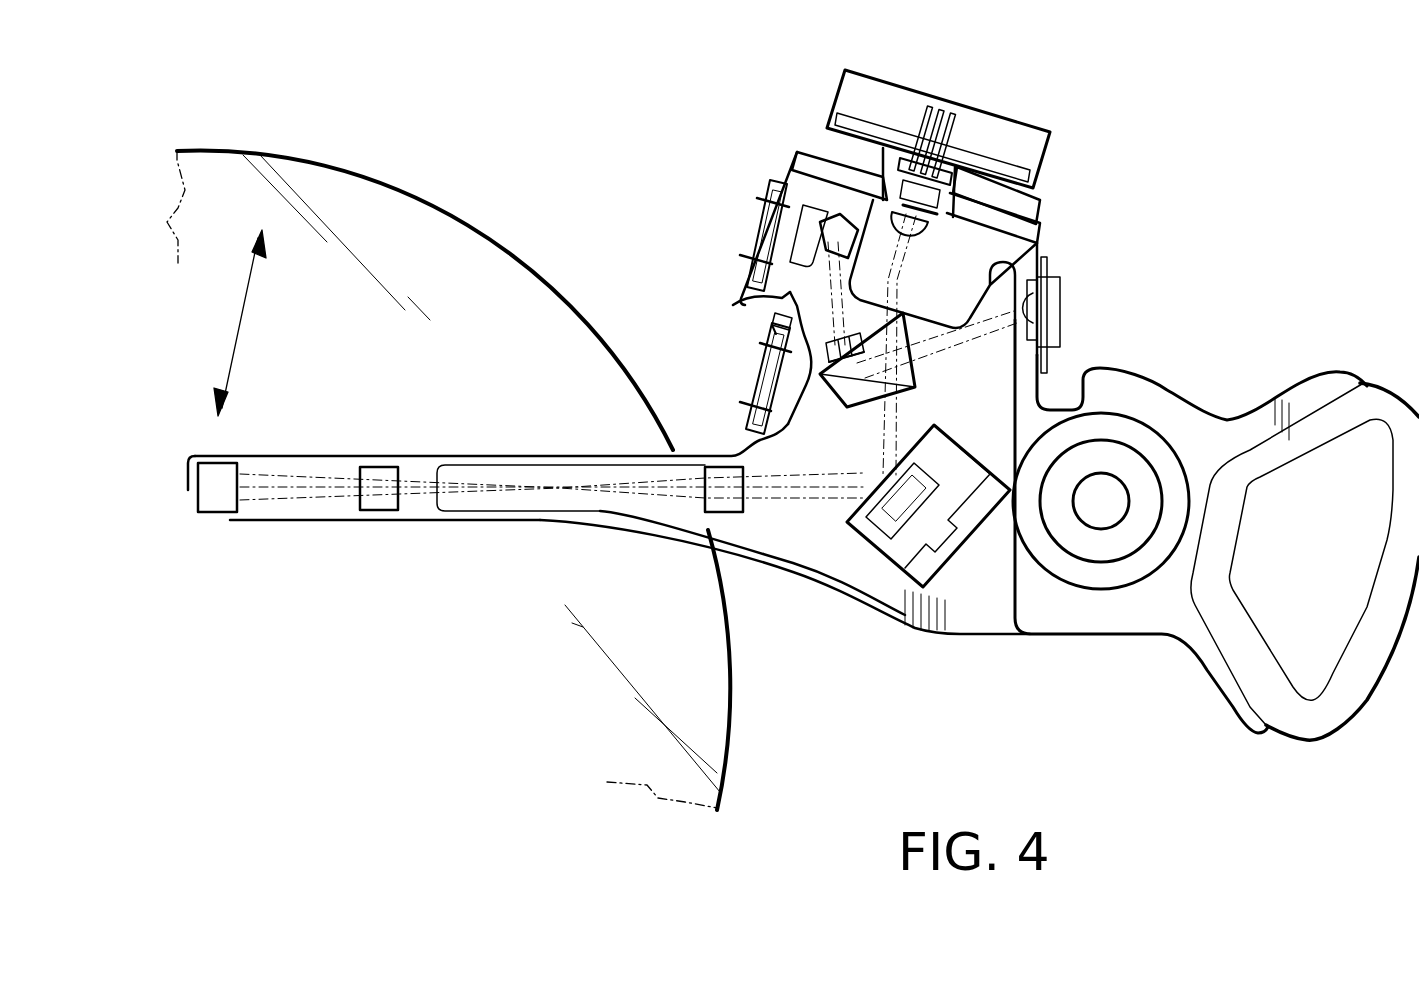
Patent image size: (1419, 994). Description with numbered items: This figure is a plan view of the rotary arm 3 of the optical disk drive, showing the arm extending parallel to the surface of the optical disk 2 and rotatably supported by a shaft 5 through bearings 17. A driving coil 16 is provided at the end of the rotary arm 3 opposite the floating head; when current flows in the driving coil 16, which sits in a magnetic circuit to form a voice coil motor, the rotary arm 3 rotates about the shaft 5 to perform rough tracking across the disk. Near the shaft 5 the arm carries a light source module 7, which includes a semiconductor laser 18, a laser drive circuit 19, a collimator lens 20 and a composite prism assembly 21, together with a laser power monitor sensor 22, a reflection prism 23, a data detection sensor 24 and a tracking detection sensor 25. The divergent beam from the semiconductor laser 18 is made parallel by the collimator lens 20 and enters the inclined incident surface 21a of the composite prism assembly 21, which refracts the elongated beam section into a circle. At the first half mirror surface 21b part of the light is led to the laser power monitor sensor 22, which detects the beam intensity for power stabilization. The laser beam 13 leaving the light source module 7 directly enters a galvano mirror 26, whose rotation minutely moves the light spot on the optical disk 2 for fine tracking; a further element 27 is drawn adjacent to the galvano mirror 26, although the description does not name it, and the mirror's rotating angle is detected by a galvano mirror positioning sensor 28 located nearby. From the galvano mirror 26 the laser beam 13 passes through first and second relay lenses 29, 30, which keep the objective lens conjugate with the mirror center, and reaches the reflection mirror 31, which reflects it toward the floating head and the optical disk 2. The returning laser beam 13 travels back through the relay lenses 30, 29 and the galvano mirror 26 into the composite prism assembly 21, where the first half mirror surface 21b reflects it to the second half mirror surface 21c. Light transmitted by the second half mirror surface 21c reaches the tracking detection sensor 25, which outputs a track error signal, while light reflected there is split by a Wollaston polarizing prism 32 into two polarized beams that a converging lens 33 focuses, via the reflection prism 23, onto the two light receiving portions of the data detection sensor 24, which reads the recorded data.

The optical disk 2 is at (373, 180).
The rotary arm 3 is at (543, 521).
The shaft 5 is at (1097, 443).
The light source module 7 is at (698, 115).
The laser beam 13 is at (316, 457).
The driving coil 16 is at (1357, 373).
The bearings 17 is at (1140, 457).
The semiconductor laser 18 is at (903, 165).
The laser drive circuit 19 is at (985, 165).
The collimator lens 20 is at (924, 228).
The composite prism assembly 21 is at (900, 343).
The incident surface 21a is at (880, 318).
The first half mirror surface 21b is at (905, 385).
The second half mirror surface 21c is at (840, 403).
The laser power monitor sensor 22 is at (1062, 296).
The reflection prism 23 is at (832, 228).
The data detection sensor 24 is at (750, 222).
The tracking detection sensor 25 is at (745, 397).
The galvano mirror 26 is at (913, 500).
The sensor window 27 is at (880, 560).
The galvano mirror positioning sensor 28 is at (945, 537).
The first relay lens 29 is at (710, 510).
The second relay lens 30 is at (376, 510).
The reflection mirror 31 is at (205, 513).
The Wollaston polarizing prism 32 is at (773, 330).
The converging lens 33 is at (787, 322).